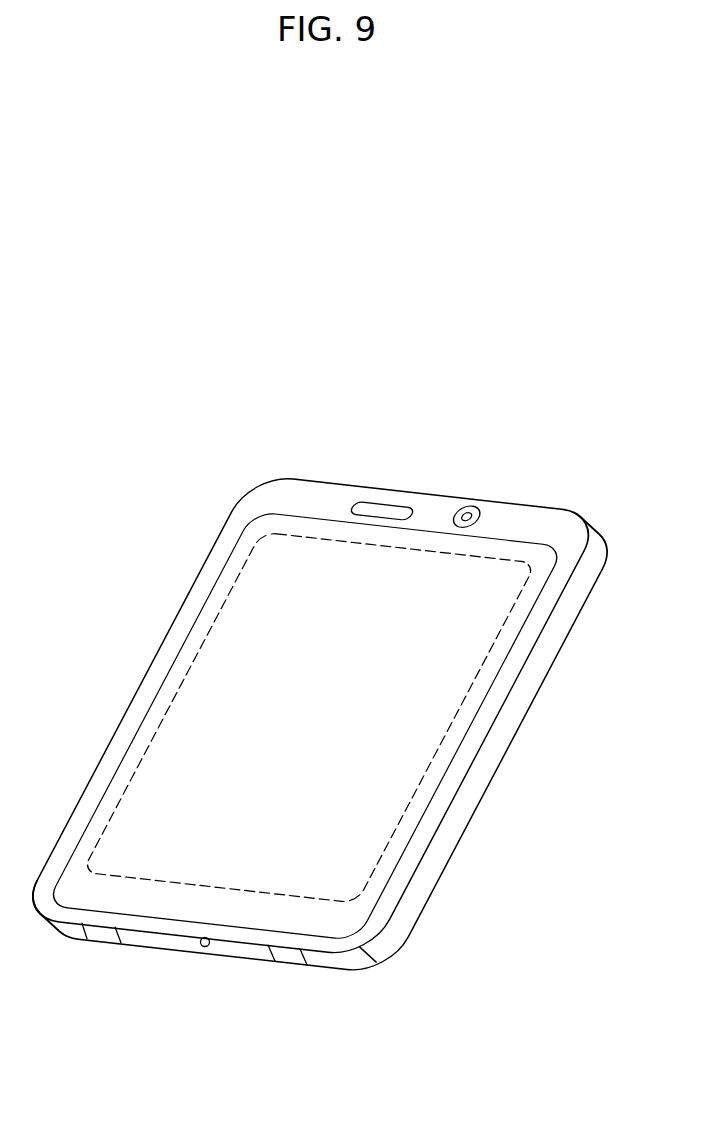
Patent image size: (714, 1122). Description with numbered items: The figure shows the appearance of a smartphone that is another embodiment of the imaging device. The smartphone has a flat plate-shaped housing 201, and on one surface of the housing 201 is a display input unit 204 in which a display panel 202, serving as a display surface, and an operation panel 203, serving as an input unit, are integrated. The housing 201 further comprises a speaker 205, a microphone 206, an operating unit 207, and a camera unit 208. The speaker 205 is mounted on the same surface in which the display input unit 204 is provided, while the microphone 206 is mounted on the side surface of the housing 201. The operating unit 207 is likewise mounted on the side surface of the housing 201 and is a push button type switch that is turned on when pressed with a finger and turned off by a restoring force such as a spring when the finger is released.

The housing 201 is at (260, 493).
The display panel 202 is at (498, 560).
The operation panel 203 is at (560, 512).
The display input unit 204 is at (636, 426).
The speaker 205 is at (382, 503).
The microphone 206 is at (204, 947).
The operating unit 207 is at (106, 940).
The camera unit 208 is at (463, 505).